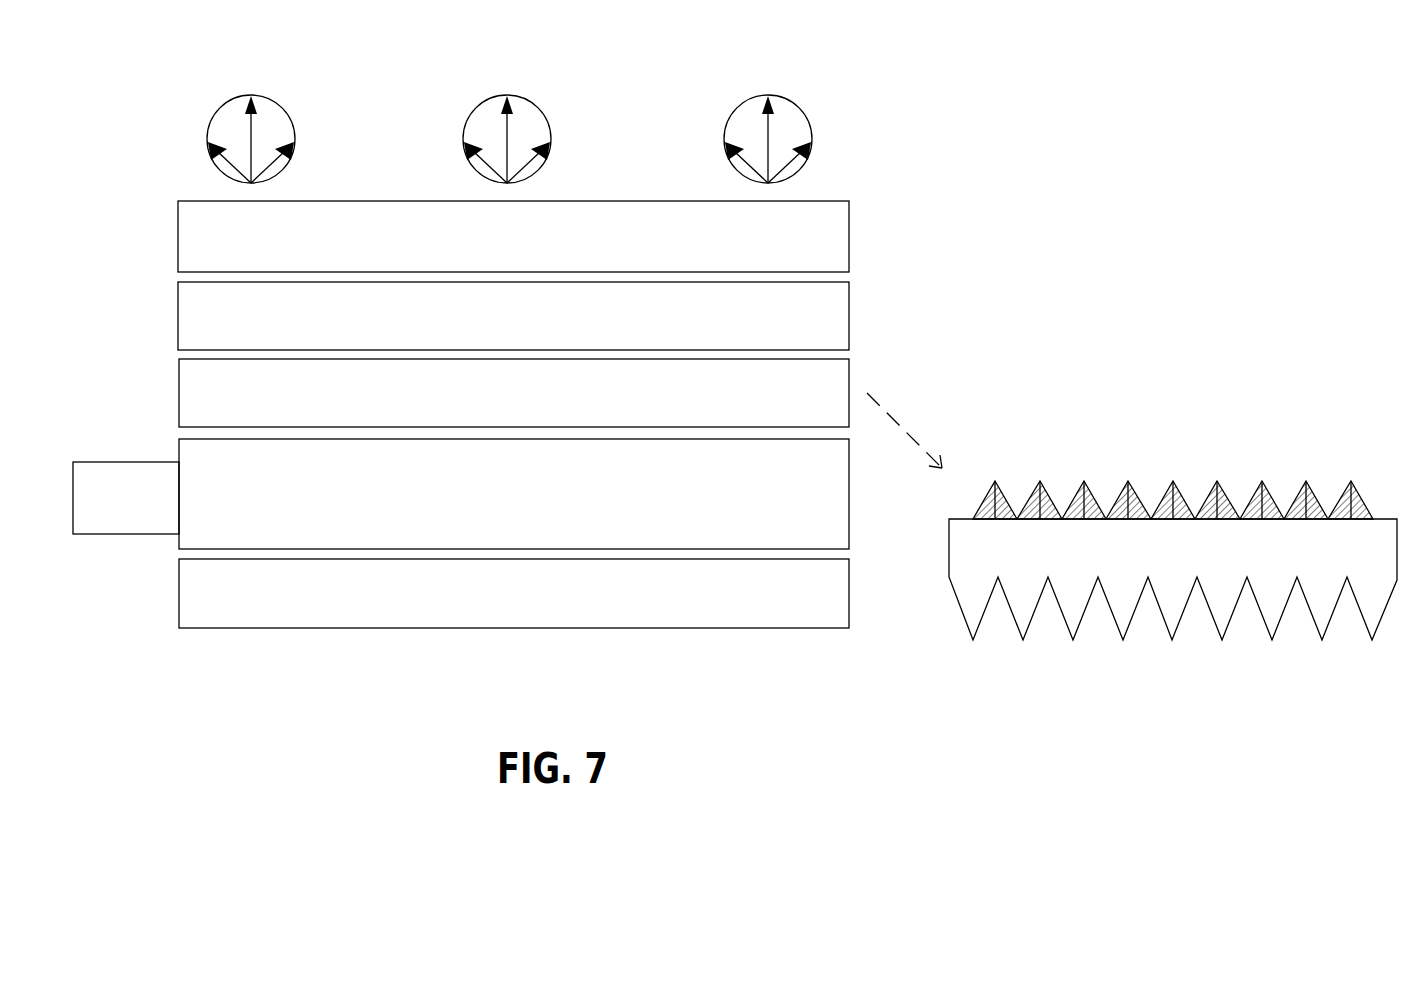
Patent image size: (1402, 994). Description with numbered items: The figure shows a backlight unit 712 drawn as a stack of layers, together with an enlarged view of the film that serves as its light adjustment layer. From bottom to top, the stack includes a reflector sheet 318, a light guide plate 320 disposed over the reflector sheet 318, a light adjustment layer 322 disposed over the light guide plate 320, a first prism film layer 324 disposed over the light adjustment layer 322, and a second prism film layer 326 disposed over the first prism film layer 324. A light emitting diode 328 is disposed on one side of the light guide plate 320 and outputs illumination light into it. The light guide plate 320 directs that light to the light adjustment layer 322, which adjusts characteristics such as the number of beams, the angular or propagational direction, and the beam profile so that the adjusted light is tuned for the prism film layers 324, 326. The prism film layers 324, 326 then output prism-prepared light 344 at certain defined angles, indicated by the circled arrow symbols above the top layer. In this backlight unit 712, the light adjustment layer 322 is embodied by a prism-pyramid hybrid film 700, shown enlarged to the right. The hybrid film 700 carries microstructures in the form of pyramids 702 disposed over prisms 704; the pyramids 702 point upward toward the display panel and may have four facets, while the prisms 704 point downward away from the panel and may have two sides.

The reflector sheet 318 is at (514, 593).
The light guide plate 320 is at (514, 494).
The light adjustment layer 322 is at (514, 393).
The first prism film layer 324 is at (513, 316).
The second prism film layer 326 is at (513, 236).
The light emitting diode 328 is at (126, 498).
The prism-prepared light 344 is at (833, 136).
The prism-pyramid hybrid film 700 is at (1156, 378).
The pyramids 702 is at (994, 481).
The prisms 704 is at (1020, 633).
The backlight unit 712 is at (1038, 152).